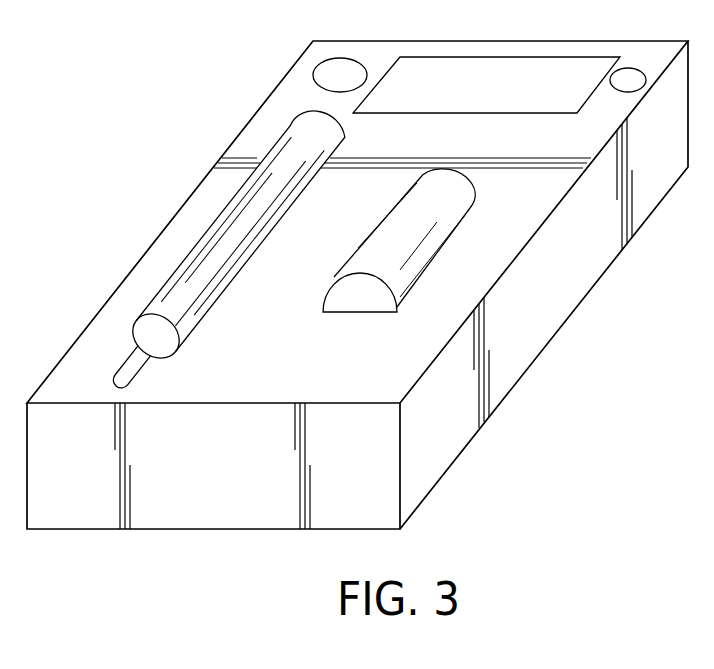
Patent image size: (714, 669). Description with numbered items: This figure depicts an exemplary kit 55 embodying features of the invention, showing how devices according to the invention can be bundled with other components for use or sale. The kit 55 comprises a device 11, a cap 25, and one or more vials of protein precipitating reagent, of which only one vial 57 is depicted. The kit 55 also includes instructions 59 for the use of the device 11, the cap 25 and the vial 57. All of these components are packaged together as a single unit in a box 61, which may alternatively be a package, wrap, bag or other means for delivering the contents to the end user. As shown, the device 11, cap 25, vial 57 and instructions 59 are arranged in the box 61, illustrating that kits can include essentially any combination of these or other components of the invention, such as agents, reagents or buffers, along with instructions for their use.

The device 11 is at (217, 248).
The cap 25 is at (340, 72).
The kit 55 is at (512, 396).
The vial of protein precipitating reagent 57 is at (437, 232).
The instructions 59 is at (532, 68).
The box 61 is at (222, 512).